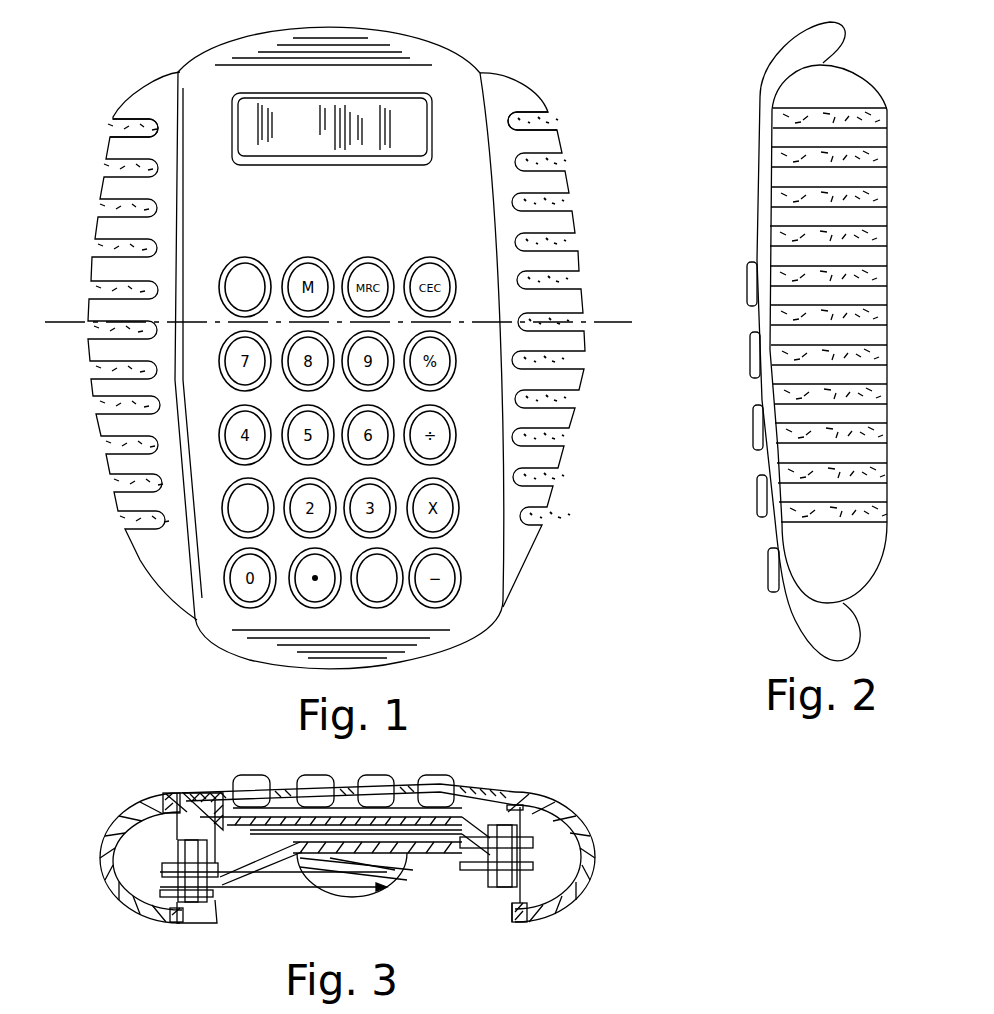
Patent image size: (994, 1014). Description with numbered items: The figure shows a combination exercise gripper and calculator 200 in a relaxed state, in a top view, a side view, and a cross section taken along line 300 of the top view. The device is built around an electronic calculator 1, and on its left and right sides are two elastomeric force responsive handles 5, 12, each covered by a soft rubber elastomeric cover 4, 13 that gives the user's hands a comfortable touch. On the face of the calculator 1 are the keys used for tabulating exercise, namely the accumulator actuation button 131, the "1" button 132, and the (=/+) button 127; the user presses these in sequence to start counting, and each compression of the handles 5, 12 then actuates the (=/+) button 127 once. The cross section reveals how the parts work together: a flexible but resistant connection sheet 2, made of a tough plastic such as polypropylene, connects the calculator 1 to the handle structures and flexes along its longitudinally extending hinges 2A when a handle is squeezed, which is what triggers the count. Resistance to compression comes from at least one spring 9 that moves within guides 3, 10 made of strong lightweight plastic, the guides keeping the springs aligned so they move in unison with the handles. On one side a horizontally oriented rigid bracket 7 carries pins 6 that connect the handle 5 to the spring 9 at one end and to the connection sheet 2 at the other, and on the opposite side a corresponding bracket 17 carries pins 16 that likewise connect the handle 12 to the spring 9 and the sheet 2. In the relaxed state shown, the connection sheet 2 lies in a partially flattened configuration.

In FIG. 1, the electronic calculator 1 is at (457, 73).
In FIG. 2, the electronic calculator 1 is at (767, 82).
In FIG. 3, the electronic calculator 1 is at (483, 790).
In FIG. 3, the connection sheet 2 is at (535, 857).
In FIG. 3, the hinges 2A is at (230, 827).
In FIG. 3, the guide 3 is at (392, 812).
In FIG. 1, the elastomeric cover 4 is at (555, 123).
In FIG. 1, the handle 5 is at (588, 207).
In FIG. 3, the handle 5 is at (555, 822).
In FIG. 3, the pin 6 is at (495, 888).
In FIG. 3, the bracket 7 is at (530, 875).
In FIG. 3, the spring 9 is at (380, 887).
In FIG. 3, the guide 10 is at (343, 903).
In FIG. 1, the handle 12 is at (147, 60).
In FIG. 3, the handle 12 is at (130, 830).
In FIG. 1, the elastomeric cover 13 is at (113, 132).
In FIG. 3, the pin 16 is at (195, 907).
In FIG. 3, the bracket 17 is at (152, 908).
In FIG. 1, the (=/+) button 127 is at (387, 588).
In FIG. 1, the accumulator actuation button 131 is at (228, 272).
In FIG. 1, the "1" button 132 is at (227, 517).
In FIG. 1, the combination exercise gripper and calculator 200 is at (235, 660).
In FIG. 2, the combination exercise gripper and calculator 200 is at (778, 660).
In FIG. 1, the line 300— 300 is at (60, 320).